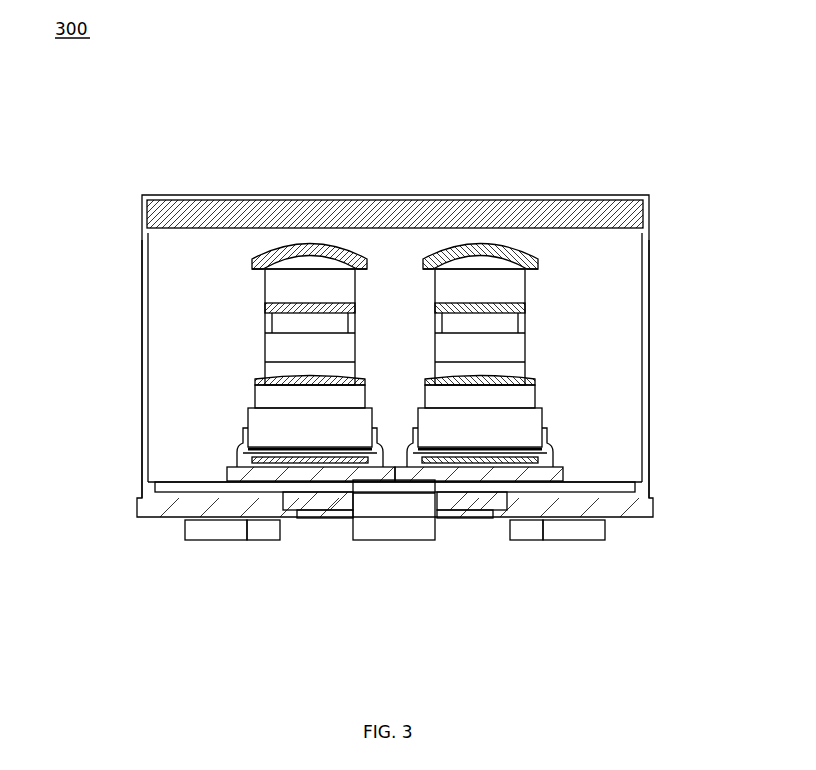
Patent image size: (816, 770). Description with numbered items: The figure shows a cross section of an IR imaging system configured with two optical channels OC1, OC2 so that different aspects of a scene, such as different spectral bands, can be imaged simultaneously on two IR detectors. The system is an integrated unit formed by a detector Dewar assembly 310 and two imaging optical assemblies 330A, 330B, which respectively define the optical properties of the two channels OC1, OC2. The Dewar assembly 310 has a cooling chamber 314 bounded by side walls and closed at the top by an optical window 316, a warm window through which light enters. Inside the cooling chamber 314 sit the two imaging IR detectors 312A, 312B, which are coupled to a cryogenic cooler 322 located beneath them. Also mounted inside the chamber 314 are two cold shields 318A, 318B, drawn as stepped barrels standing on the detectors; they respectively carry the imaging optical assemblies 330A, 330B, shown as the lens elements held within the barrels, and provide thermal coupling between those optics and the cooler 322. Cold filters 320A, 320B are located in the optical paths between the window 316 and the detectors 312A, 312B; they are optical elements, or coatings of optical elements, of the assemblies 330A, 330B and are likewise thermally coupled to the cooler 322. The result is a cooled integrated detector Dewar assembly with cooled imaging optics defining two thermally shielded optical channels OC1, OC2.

The Dewar assembly 310 is at (655, 130).
The IR detector 312A is at (278, 468).
The IR detector 312B is at (447, 466).
The cooling chamber 314 is at (140, 355).
The optical window 316 is at (190, 210).
The cold shield 318A is at (254, 404).
The cold shield 318B is at (534, 420).
The cold filter 320A is at (266, 424).
The cold filter 320B is at (553, 410).
The cryogenic cooler 322 is at (428, 494).
The imaging optical assembly 330A is at (263, 378).
The imaging optical assembly 330B is at (537, 262).
The optical channel OC1 is at (308, 280).
The optical channel OC2 is at (491, 280).